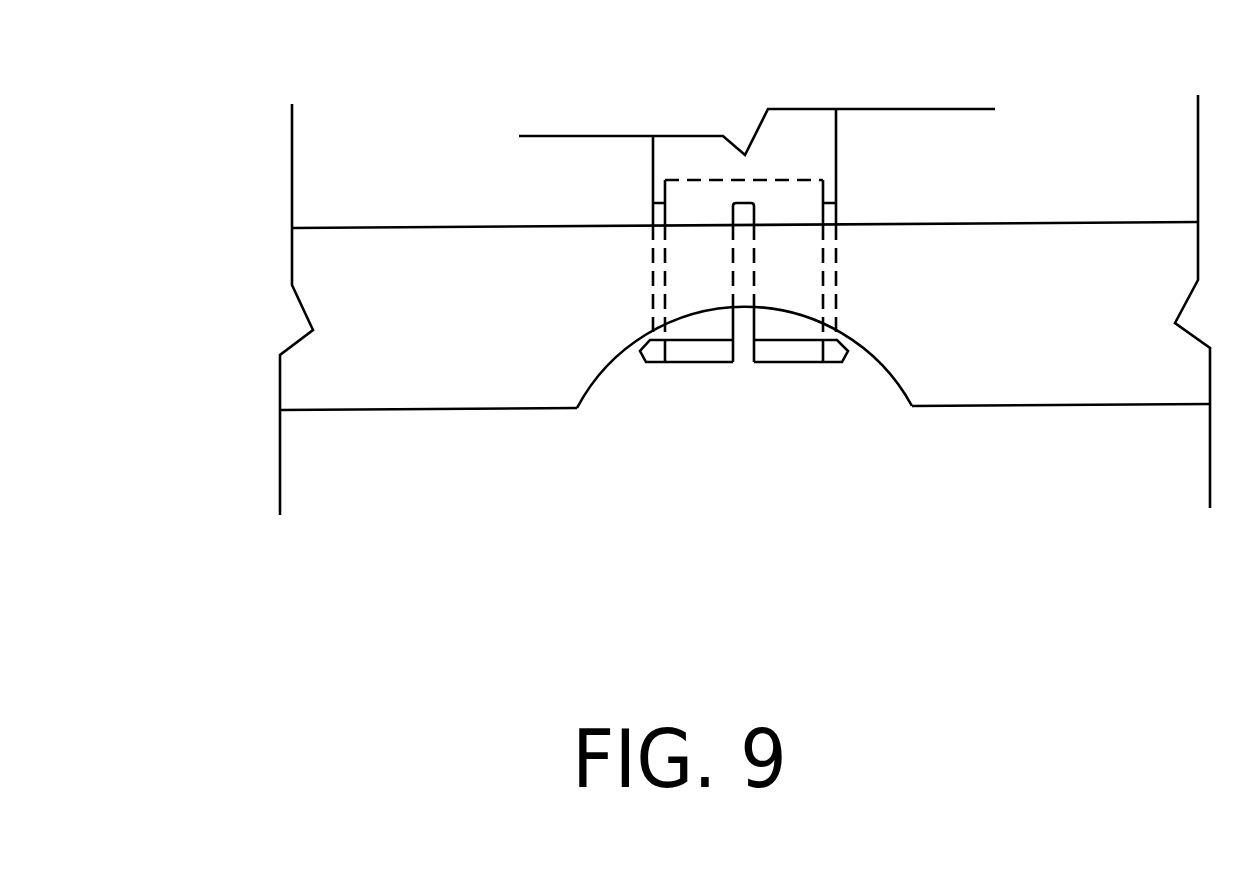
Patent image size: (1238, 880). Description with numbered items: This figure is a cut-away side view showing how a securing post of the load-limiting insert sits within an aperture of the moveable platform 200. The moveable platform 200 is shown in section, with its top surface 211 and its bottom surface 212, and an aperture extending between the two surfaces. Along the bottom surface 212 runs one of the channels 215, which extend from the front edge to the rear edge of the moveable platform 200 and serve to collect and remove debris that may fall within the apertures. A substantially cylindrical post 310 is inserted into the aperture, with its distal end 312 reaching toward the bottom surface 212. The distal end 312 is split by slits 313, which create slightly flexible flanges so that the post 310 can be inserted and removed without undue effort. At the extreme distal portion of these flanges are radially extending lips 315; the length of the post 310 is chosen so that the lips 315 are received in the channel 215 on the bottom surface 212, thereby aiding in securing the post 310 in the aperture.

The moveable platform 200 is at (475, 385).
The top surface 211 is at (400, 228).
The bottom surface 212 is at (400, 410).
The channels 215 is at (875, 360).
The posts 310 is at (835, 258).
The distal end 312 is at (787, 355).
The slits 313 is at (740, 355).
The radially extending lips 315 is at (643, 358).